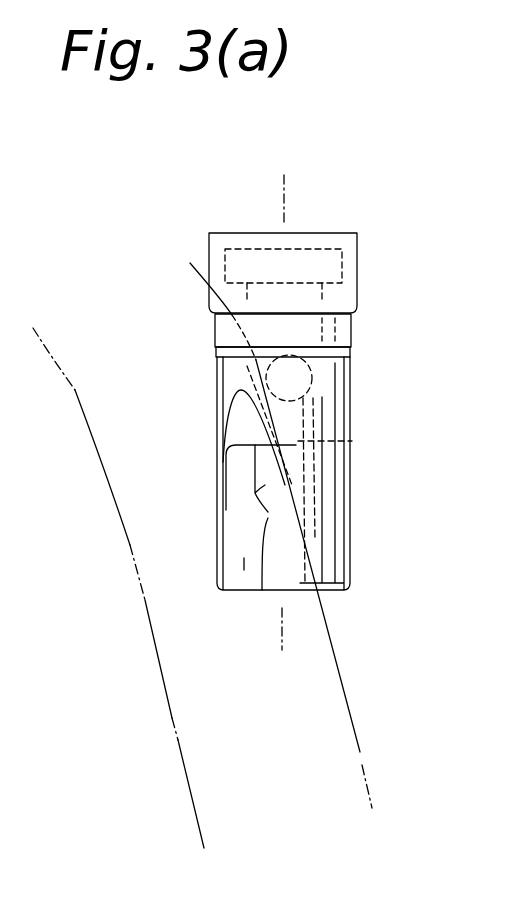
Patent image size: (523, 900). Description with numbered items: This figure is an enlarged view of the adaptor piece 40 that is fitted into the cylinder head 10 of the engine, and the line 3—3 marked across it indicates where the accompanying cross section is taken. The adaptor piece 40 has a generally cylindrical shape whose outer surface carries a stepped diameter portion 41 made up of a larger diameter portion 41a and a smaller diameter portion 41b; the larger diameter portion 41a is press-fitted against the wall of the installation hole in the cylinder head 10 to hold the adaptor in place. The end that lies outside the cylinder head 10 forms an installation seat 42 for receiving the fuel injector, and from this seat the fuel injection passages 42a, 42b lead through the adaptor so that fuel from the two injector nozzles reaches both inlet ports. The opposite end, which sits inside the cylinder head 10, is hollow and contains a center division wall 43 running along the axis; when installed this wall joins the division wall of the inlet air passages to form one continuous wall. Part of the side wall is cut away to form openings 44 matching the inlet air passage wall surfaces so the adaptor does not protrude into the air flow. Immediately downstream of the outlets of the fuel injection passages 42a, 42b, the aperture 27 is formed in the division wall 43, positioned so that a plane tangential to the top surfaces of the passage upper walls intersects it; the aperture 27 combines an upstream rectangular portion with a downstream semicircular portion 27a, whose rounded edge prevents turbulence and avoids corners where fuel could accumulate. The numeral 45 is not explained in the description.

The line 3— 3 is at (284, 182).
The cylinder head 10 is at (423, 566).
The aperture 27 is at (303, 511).
The semicircular portion 27a is at (262, 590).
The adaptor piece 40 is at (352, 422).
The stepped diameter portion 41 is at (341, 344).
The larger diameter portion 41a is at (352, 321).
The smaller diameter portion 41b is at (352, 384).
The installation seat 42 is at (357, 251).
The fuel injection passage 42a is at (352, 443).
The fuel injection passage 42b is at (314, 469).
The center division wall 43 is at (244, 570).
The openings 44 is at (238, 400).
The wheel rim 45 is at (360, 752).